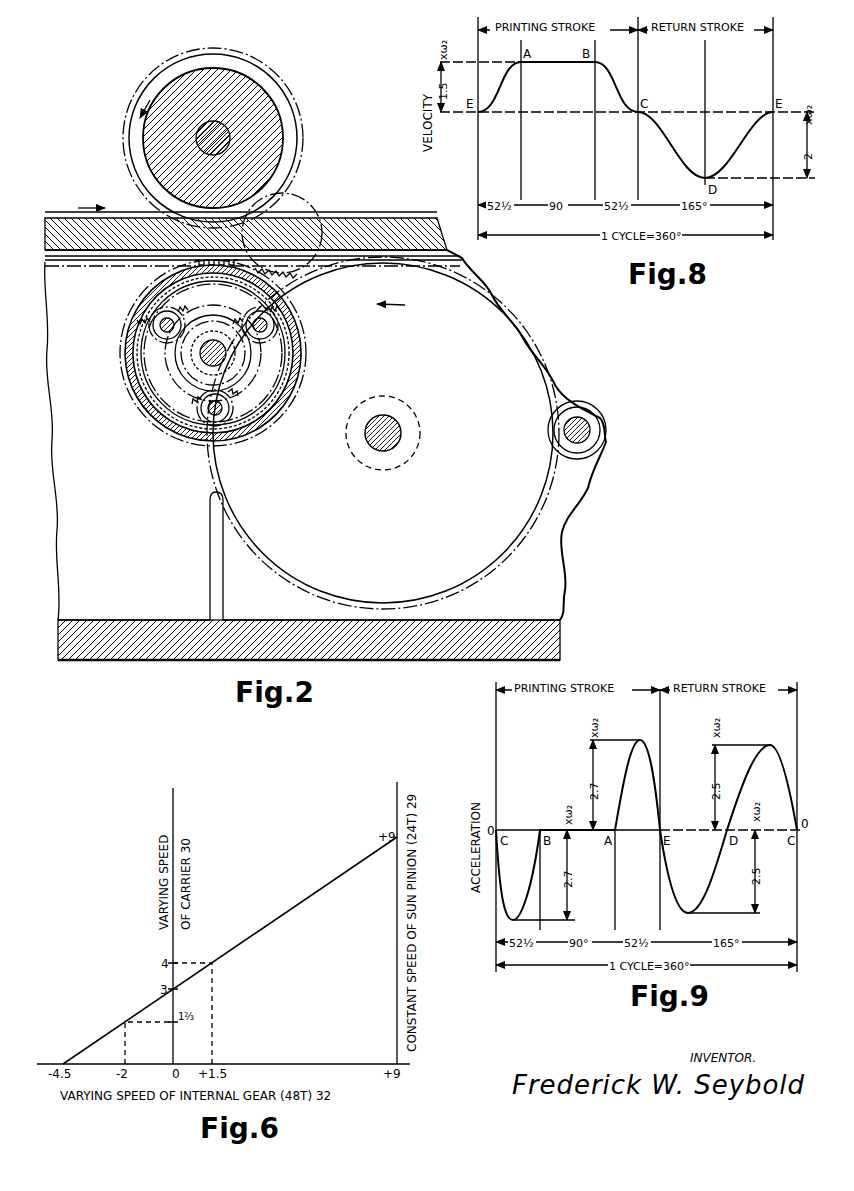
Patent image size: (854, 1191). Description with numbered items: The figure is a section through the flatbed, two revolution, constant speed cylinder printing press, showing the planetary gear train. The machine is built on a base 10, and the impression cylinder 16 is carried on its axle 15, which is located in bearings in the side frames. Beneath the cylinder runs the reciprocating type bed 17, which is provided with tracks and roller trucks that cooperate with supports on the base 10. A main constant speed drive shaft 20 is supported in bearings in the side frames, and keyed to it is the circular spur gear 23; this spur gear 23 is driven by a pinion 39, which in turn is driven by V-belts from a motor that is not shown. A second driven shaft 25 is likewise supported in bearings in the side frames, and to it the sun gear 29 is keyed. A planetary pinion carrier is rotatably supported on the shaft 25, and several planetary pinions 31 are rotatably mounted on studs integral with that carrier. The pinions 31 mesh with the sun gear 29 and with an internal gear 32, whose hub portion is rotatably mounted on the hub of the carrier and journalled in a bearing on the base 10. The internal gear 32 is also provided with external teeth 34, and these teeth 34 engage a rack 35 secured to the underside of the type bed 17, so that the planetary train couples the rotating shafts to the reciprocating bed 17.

The base 10 is at (557, 533).
The axle 15 is at (197, 143).
The impression cylinder 16 is at (283, 128).
The reciprocating type bed 17 is at (345, 216).
The main constant speed drive shaft 20 is at (396, 424).
The circular spur gear 23 is at (517, 538).
The second driven shaft 25 is at (205, 354).
The sun gear 29 is at (238, 371).
The planetary pinions 31 is at (176, 317).
The internal gear 32 is at (147, 403).
The external teeth 34 is at (128, 317).
The rack 35 is at (106, 262).
The pinion 39 is at (609, 420).